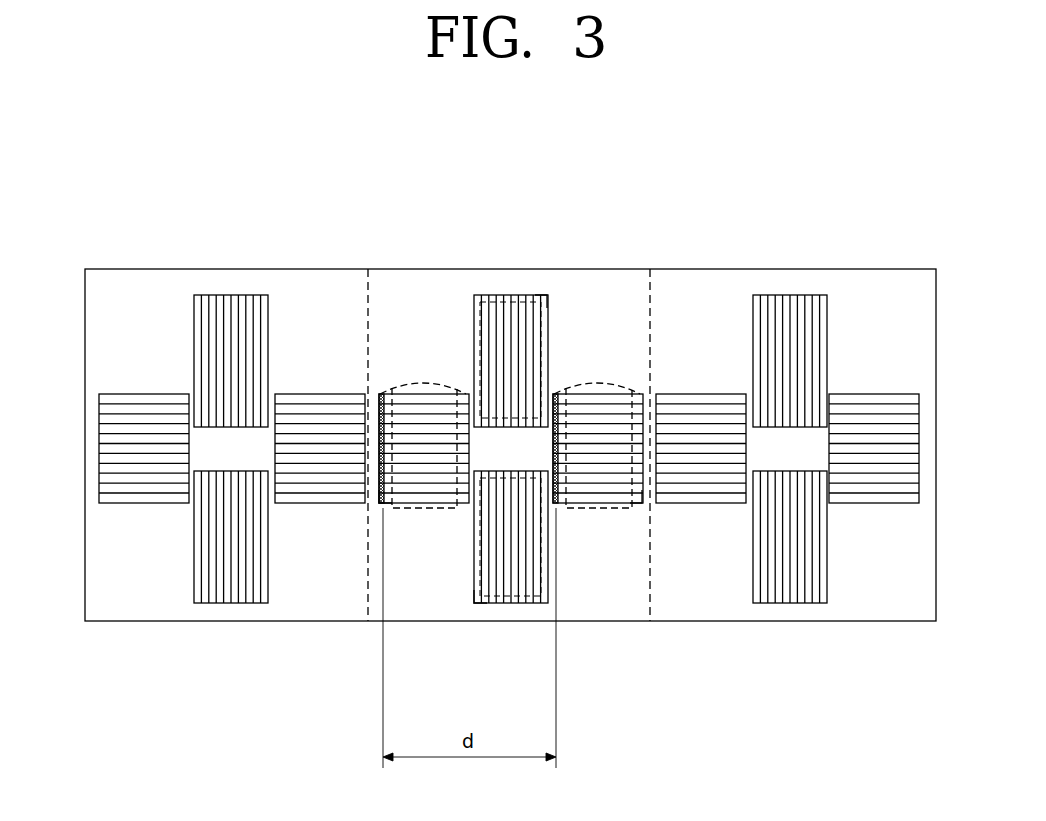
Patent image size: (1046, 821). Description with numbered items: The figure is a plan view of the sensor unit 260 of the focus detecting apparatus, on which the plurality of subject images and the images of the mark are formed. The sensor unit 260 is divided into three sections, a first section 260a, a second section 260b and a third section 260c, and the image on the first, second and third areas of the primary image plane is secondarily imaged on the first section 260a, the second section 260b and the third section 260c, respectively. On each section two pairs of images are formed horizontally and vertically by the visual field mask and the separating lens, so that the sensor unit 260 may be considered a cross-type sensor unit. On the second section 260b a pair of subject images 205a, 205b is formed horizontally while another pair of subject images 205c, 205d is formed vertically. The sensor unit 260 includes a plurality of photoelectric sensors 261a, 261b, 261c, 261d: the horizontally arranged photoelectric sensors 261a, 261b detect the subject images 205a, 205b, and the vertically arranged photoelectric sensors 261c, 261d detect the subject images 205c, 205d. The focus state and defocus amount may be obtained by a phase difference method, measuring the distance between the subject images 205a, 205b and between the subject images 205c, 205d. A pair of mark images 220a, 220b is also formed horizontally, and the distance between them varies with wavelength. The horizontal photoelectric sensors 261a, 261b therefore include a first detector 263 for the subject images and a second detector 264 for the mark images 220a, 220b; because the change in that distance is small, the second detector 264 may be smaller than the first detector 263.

The sensor unit 260 is at (290, 177).
The first section 260a is at (172, 276).
The second section 260b is at (498, 454).
The third section 260c is at (715, 276).
The subject image 205a is at (440, 512).
The subject image 205b is at (610, 512).
The subject image 205c is at (493, 298).
The subject image 205d is at (505, 600).
The photoelectric sensor 261a is at (373, 508).
The photoelectric sensor 261b is at (638, 508).
The photoelectric sensor 261c is at (533, 291).
The photoelectric sensor 261d is at (475, 611).
The mark image 220a is at (385, 510).
The mark image 220b is at (557, 512).
The first detector 263 is at (430, 385).
The second detector 264 is at (382, 392).